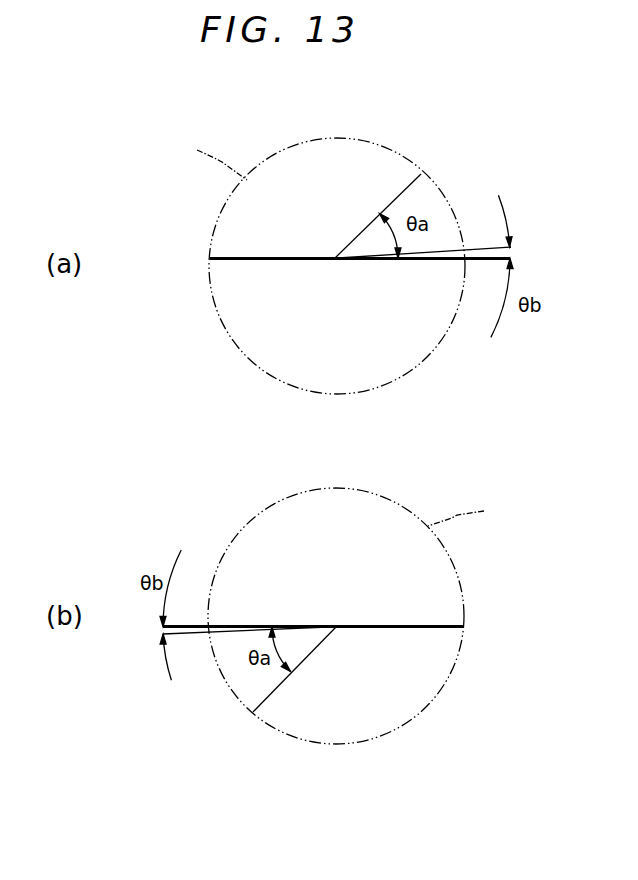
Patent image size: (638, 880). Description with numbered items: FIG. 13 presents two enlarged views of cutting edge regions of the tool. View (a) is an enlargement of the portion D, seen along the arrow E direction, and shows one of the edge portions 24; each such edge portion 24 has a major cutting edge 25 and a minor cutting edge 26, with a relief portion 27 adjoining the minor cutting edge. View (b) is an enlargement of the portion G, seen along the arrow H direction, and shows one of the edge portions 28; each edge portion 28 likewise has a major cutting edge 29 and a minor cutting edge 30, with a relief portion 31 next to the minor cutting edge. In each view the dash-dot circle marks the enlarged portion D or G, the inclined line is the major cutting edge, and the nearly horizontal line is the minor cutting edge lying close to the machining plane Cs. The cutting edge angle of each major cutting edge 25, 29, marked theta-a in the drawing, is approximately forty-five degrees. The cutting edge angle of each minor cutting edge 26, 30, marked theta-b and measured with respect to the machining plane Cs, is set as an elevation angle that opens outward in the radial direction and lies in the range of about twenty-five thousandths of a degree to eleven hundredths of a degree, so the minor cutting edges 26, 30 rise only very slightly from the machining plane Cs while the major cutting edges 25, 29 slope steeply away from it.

The edge portion 24 is at (228, 218).
The major cutting edge 25 is at (407, 189).
The minor cutting edge 26 is at (327, 262).
The relief portion 27 is at (222, 262).
The edge portion 28 is at (440, 679).
The major cutting edge 29 is at (267, 695).
The minor cutting edge 30 is at (345, 626).
The relief portion 31 is at (450, 626).
The portion D is at (215, 156).
The portion G is at (464, 508).
The machining plane Cs is at (362, 258).